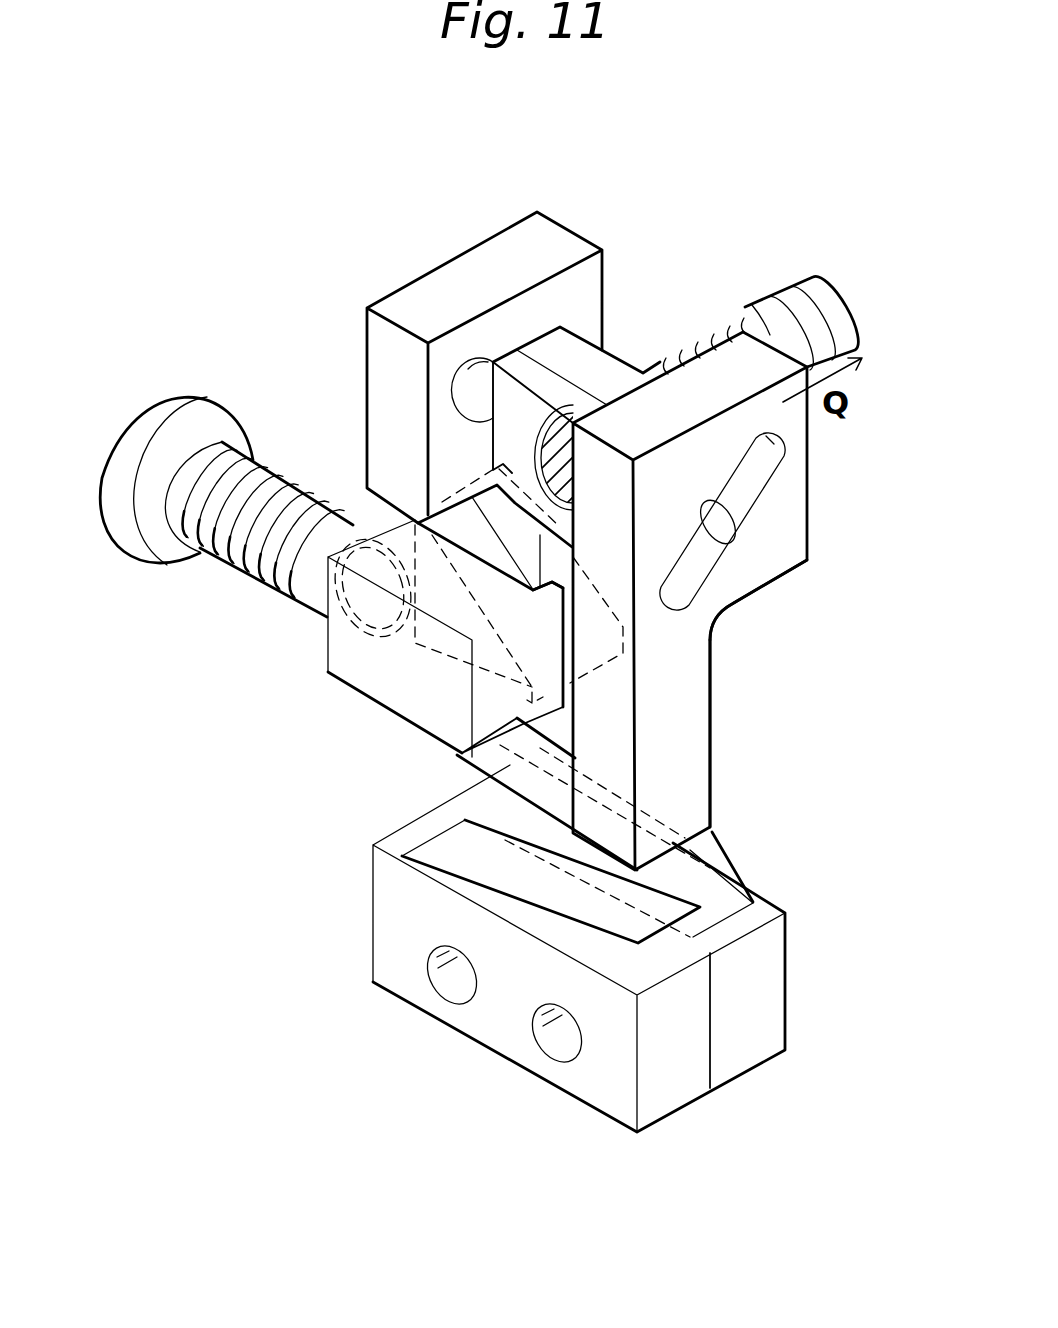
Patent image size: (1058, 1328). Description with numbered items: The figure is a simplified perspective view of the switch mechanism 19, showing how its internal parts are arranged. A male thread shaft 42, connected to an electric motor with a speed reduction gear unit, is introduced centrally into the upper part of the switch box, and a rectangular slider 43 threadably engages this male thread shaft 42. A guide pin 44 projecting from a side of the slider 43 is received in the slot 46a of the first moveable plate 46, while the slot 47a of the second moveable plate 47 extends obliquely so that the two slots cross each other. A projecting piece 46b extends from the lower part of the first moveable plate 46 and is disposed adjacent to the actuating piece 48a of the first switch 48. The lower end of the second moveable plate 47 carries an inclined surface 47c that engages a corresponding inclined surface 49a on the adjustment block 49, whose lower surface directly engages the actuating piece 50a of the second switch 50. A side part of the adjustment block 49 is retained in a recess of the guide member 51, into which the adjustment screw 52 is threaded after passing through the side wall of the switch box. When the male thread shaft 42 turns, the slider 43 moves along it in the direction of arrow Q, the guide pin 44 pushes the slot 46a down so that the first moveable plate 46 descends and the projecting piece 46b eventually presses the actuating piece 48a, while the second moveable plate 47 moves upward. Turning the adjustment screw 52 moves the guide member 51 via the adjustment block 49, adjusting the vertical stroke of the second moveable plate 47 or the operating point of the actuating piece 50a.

The switch mechanism 19 is at (681, 190).
The male thread shaft 42 is at (840, 320).
The slider 43 is at (610, 352).
The guide pin 44 is at (730, 518).
The first moveable plate 46 is at (785, 568).
The slot 46a is at (692, 585).
The projecting piece 46b is at (702, 781).
The second moveable plate 47 is at (567, 231).
The slot 47a is at (455, 383).
The inclined surface 47c is at (427, 500).
The first switch 48 is at (604, 1095).
The actuating piece 48a is at (462, 864).
The adjustment block 49 is at (540, 628).
The inclined surface 49a is at (468, 682).
The second switch 50 is at (770, 1017).
The actuating piece 50a is at (706, 878).
The guide member 51 is at (334, 655).
The adjustment screw 52 is at (160, 425).